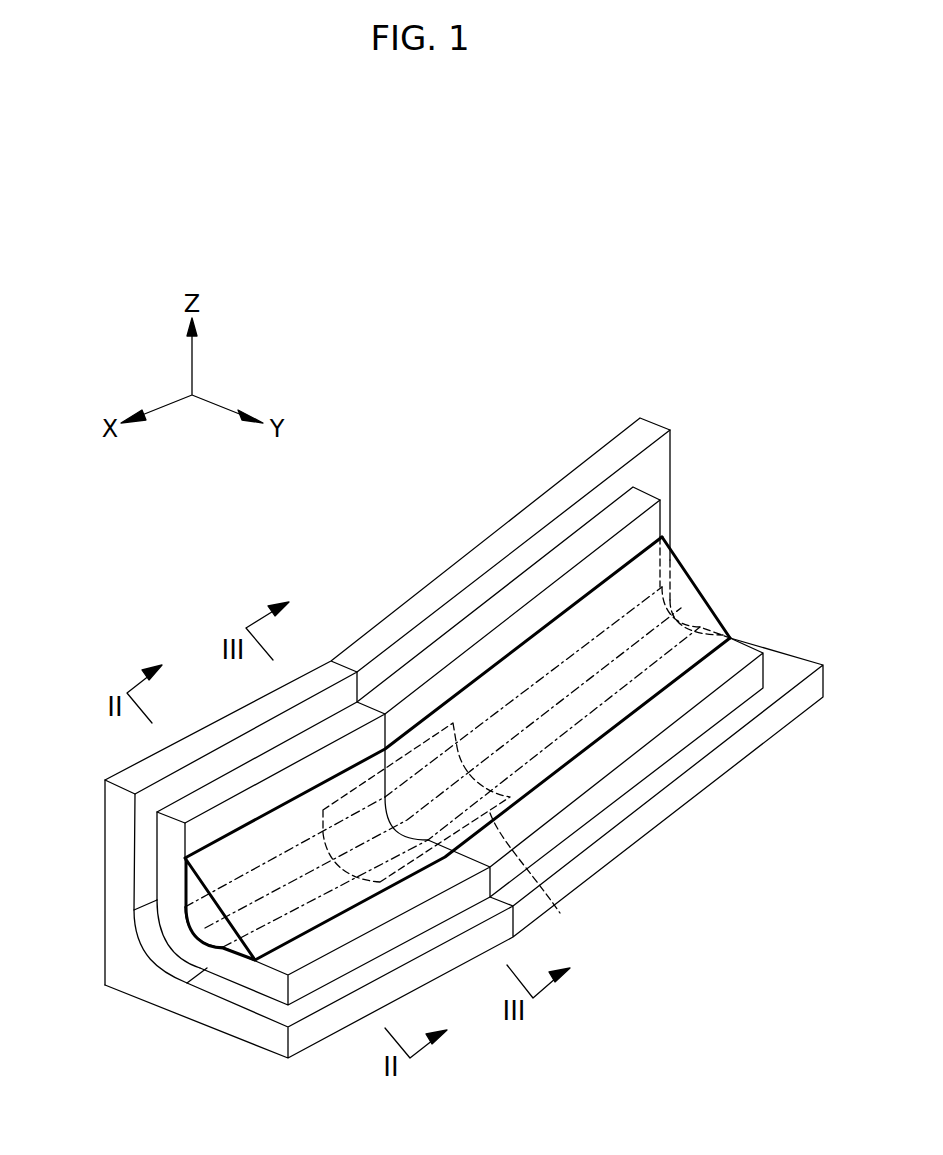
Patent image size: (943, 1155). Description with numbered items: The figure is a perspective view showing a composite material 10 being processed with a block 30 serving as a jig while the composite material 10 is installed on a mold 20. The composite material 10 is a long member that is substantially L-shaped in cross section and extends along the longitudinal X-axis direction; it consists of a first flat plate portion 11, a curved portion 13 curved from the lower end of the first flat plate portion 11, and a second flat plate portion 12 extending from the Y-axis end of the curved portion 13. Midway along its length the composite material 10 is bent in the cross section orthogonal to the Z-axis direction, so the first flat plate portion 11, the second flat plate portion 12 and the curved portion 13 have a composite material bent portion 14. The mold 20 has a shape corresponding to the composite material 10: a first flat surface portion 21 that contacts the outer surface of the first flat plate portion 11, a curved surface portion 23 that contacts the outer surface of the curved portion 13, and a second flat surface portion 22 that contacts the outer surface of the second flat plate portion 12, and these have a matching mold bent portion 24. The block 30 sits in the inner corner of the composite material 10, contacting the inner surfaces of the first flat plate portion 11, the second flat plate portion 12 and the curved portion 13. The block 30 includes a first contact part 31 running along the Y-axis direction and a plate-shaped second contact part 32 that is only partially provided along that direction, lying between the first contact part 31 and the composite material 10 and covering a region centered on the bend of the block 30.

The composite material 10 is at (400, 747).
The first flat plate portion 11 is at (167, 857).
The second flat plate portion 12 is at (237, 975).
The curved portion 13 is at (165, 930).
The composite material bent portion 14 is at (383, 703).
The mold 20 is at (433, 726).
The first flat surface portion 21 is at (147, 806).
The second flat surface portion 22 is at (275, 1008).
The curved surface portion 23 is at (165, 957).
The mold bent portion 24 is at (360, 670).
The block 30 is at (511, 731).
The first contact part 31 is at (712, 598).
The second contact part 32 is at (555, 900).